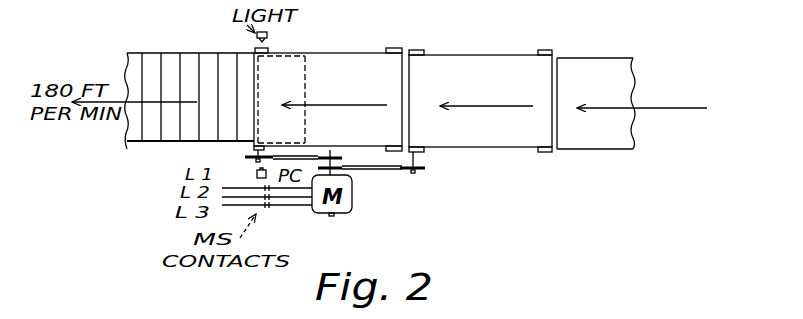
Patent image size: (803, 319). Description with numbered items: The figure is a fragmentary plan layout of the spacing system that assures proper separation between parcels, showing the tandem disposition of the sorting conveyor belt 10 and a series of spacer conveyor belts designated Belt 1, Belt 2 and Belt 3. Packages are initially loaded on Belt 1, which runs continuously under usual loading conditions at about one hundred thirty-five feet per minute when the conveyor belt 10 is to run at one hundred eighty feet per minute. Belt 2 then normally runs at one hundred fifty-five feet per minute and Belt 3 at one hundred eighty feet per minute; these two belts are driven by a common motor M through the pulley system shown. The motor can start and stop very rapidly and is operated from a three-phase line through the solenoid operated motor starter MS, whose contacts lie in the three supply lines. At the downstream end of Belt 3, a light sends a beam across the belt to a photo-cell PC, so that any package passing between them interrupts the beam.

The conveyor belt 10 is at (139, 143).
The Belt 1 is at (628, 28).
The Belt 2 is at (480, 36).
The Belt 3 is at (364, 51).